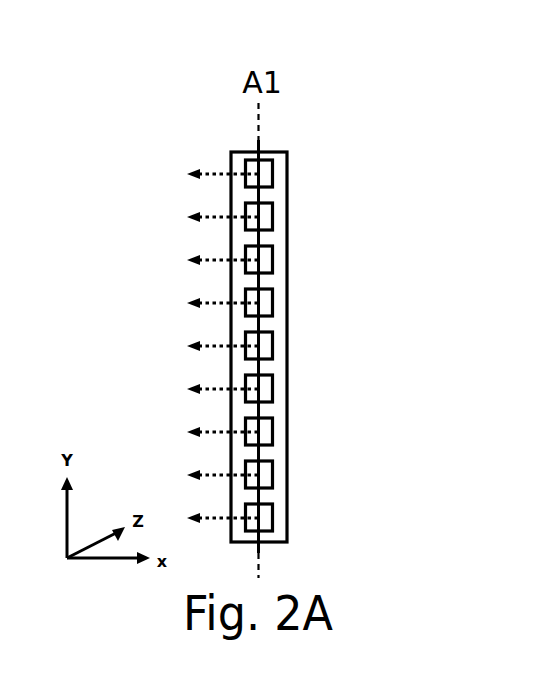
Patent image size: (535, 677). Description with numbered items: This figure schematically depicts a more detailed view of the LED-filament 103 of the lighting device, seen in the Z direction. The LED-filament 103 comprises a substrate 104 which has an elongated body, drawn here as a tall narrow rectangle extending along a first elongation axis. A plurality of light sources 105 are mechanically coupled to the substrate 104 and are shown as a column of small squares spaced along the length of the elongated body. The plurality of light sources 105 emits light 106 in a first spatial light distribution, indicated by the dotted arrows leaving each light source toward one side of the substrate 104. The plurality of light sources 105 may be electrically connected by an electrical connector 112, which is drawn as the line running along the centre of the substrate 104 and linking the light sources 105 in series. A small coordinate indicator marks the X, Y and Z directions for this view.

The LED-filament 103 is at (326, 124).
The substrate 104 is at (287, 370).
The light sources 105 is at (276, 182).
The light 106 is at (215, 182).
The electrical connector 112 is at (245, 372).